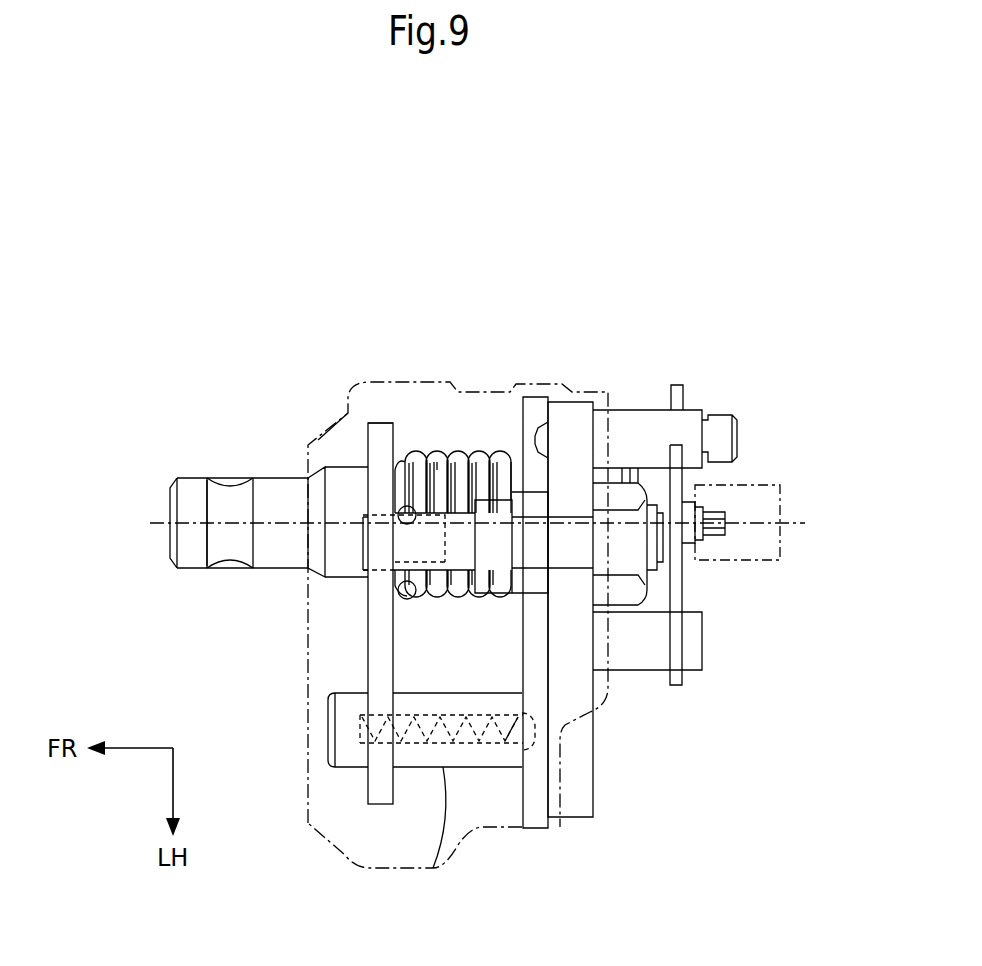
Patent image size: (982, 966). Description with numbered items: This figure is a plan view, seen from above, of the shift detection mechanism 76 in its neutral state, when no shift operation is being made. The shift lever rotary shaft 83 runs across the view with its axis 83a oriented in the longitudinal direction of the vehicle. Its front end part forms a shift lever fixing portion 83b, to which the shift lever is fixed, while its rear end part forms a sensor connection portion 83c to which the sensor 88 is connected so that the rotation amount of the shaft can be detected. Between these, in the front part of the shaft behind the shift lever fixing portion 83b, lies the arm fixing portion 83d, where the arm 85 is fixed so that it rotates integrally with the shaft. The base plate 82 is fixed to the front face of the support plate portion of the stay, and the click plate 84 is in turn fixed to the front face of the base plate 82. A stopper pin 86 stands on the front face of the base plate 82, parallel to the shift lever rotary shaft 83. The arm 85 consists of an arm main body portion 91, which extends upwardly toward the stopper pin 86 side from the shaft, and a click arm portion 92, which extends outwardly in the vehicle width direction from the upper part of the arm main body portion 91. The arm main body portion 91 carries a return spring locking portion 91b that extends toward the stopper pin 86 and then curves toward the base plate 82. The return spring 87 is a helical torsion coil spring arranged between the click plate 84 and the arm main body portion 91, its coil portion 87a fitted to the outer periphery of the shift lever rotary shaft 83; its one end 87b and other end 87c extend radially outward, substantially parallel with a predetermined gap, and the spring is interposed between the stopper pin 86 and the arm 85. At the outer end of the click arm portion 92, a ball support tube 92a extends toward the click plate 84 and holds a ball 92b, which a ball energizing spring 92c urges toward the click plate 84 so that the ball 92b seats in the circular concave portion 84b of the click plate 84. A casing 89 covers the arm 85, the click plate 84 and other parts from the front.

The shift detection mechanism 76 is at (505, 246).
The base plate 82 is at (578, 438).
The shift lever rotary shaft 83 is at (287, 474).
The axis 83a is at (237, 523).
The shift lever fixing portion 83b is at (260, 476).
The sensor connection portion 83c is at (712, 540).
The arm fixing portion 83d is at (355, 465).
The click plate 84 is at (530, 785).
The circular concave portion 84b is at (535, 714).
The arm 85 is at (350, 664).
The stopper pin 86 is at (465, 510).
The return spring 87 is at (452, 530).
The coil portion 87a is at (488, 470).
The one end 87b is at (413, 450).
The other end 87c is at (400, 598).
The sensor 88 is at (765, 485).
The casing 89 is at (333, 423).
The arm main body portion 91 is at (382, 424).
The return spring locking portion 91b is at (440, 436).
The click arm portion 92 is at (367, 785).
The ball support tube 92a is at (433, 868).
The ball 92b is at (503, 748).
The ball energizing spring 92c is at (410, 748).